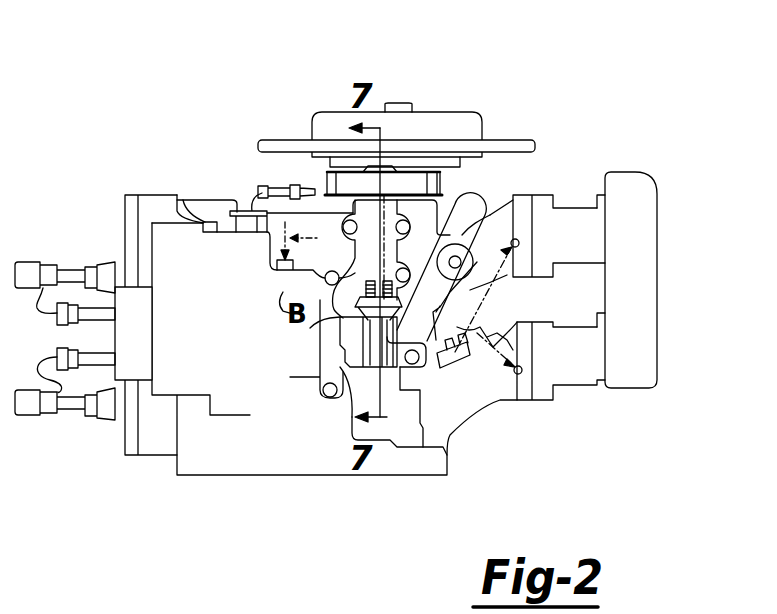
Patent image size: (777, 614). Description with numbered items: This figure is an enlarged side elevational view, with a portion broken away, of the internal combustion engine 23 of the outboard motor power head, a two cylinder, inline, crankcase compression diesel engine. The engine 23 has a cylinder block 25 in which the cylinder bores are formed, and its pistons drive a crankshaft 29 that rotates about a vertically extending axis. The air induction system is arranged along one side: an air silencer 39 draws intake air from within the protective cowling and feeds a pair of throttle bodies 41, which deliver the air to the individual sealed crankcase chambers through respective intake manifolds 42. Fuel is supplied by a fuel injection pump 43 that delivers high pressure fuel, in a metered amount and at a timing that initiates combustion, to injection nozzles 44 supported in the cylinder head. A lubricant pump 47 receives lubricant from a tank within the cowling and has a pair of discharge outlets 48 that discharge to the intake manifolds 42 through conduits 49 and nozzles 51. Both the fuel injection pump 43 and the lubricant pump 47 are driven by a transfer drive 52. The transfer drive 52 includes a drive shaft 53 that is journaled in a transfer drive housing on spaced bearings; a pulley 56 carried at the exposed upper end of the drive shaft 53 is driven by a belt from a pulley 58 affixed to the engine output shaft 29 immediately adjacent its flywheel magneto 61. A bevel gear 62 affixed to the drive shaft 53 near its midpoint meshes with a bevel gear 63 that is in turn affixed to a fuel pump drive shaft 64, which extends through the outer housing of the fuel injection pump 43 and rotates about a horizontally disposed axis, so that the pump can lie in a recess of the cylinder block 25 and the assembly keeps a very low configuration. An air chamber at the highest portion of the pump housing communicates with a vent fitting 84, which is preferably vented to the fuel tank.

The internal combustion engine 23 is at (197, 196).
The cylinder block 25 is at (221, 200).
The crankshaft 29 is at (415, 103).
The air silencer 39 is at (650, 220).
The throttle bodies 41 is at (577, 213).
The intake manifolds 42 is at (513, 200).
The fuel injection pump 43 is at (227, 380).
The injection nozzles 44 is at (110, 267).
The lubricant pump 47 is at (437, 410).
The discharge outlets 48 is at (487, 403).
The conduits 49 is at (480, 296).
The nozzles 51 is at (515, 243).
The transfer drive 52 is at (330, 400).
The transfer drive shaft 53 is at (353, 267).
The pulley 56 is at (347, 180).
The pulley 58 is at (440, 180).
The flywheel magneto 61 is at (476, 118).
The bevel gear 62 is at (455, 398).
The bevel gear 63 is at (352, 425).
The fuel pump drive shaft 64 is at (340, 317).
The vent fitting 84 is at (177, 194).